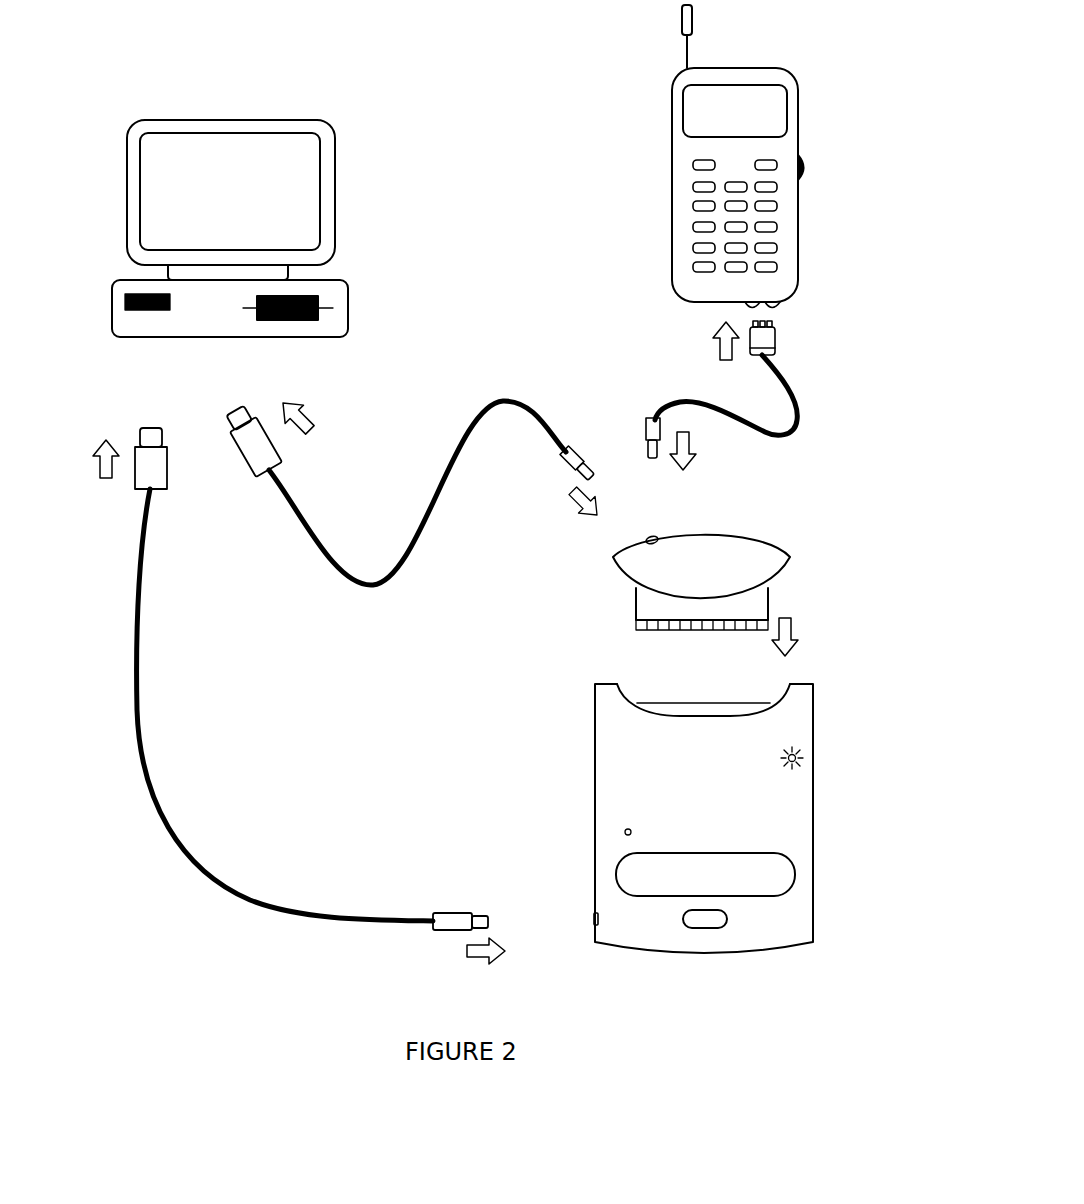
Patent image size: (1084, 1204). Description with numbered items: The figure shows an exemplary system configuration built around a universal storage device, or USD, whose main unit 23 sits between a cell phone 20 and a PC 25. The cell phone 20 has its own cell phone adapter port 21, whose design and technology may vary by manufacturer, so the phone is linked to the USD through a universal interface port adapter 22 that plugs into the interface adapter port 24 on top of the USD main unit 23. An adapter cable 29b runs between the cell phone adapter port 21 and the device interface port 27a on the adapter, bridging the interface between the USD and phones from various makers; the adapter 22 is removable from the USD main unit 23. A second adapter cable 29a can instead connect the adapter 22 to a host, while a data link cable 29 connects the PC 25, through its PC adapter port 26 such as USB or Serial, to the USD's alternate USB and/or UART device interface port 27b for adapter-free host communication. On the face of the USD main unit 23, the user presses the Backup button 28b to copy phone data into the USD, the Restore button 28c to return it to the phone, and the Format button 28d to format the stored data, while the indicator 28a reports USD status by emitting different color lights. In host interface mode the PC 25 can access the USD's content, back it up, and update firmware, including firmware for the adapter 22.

The cell phone 20 is at (672, 158).
The cell phone adapter port 21 is at (782, 305).
The universal interface port adapter 22 is at (790, 557).
The USD main unit 23 is at (594, 705).
The interface adapter port 24 is at (767, 700).
The PC 25 is at (335, 156).
The PC adapter port 26 is at (125, 302).
The device interface port 27a is at (657, 537).
The device interface port 27b is at (594, 918).
The indicator 28a is at (793, 746).
The Backup button 28b is at (795, 862).
The Restore button 28c is at (727, 918).
The Format button 28d is at (625, 832).
The data link cable 29 is at (167, 476).
The adapter cable 29a is at (248, 462).
The adapter cable 29b is at (644, 425).